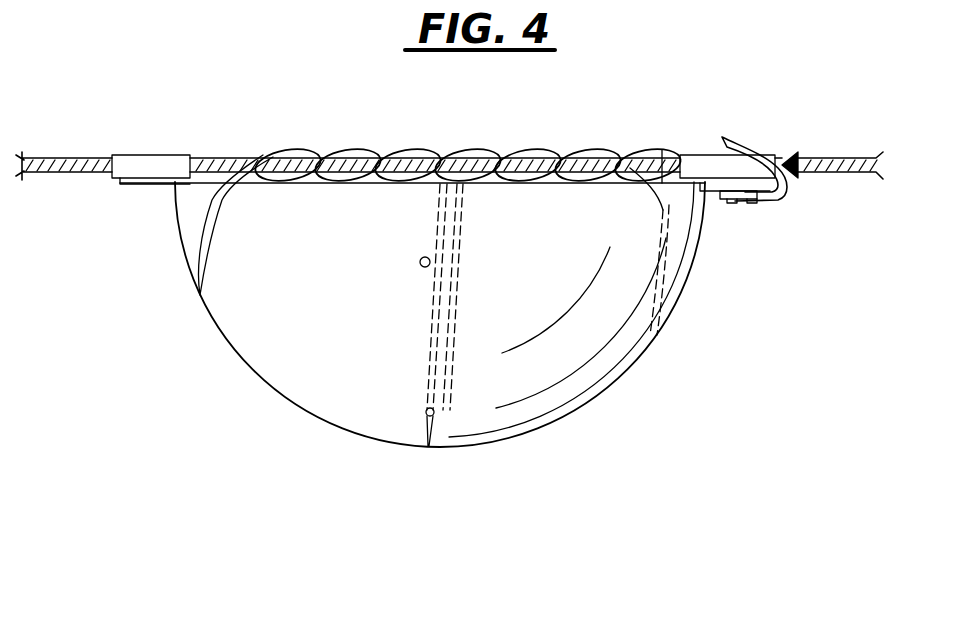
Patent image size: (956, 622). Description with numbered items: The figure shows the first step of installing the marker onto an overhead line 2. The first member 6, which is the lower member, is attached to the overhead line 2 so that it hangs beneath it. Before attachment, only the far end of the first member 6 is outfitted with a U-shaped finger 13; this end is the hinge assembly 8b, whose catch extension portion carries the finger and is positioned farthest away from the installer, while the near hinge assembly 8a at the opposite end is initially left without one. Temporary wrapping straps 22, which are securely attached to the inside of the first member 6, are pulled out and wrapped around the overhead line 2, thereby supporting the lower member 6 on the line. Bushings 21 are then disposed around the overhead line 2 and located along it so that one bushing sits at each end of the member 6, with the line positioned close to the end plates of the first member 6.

The overhead line 2 is at (81, 157).
The bushing 21 is at (164, 156).
The temporary wrapping strap 22 is at (307, 156).
The first member 6 is at (243, 400).
The hinge assembly 8a is at (153, 193).
The hinge assembly 8b is at (743, 213).
The U-shaped finger 13 is at (785, 194).